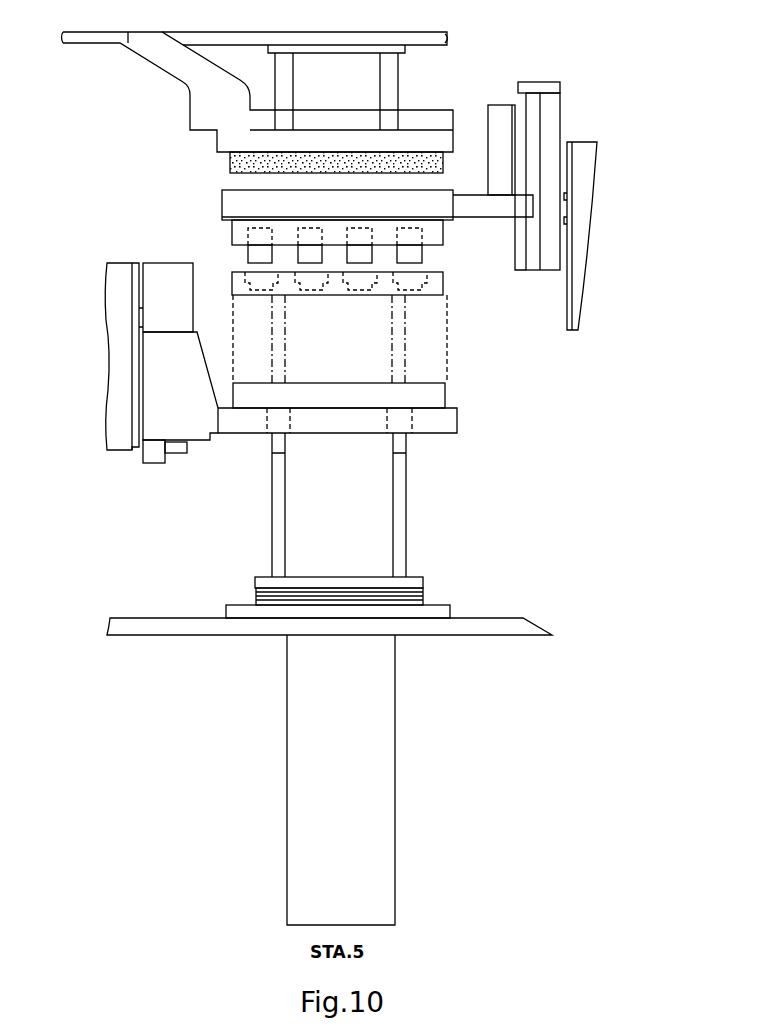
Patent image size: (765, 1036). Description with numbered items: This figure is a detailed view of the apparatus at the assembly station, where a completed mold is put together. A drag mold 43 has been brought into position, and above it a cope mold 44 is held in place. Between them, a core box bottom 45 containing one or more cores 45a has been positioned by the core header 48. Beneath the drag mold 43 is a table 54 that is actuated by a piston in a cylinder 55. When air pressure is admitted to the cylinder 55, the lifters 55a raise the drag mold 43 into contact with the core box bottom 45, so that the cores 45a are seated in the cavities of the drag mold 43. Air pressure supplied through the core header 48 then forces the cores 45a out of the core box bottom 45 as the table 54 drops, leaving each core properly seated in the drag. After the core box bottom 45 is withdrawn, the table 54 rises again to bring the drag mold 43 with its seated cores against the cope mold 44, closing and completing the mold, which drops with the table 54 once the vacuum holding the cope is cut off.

The drag mold 43 is at (444, 288).
The cope mold 44 is at (443, 161).
The core box bottom 45 is at (232, 236).
The cores 45a is at (248, 253).
The core header 48 is at (222, 197).
The table 54 is at (457, 422).
The cylinder 55 is at (383, 698).
The lifters 55a is at (275, 531).